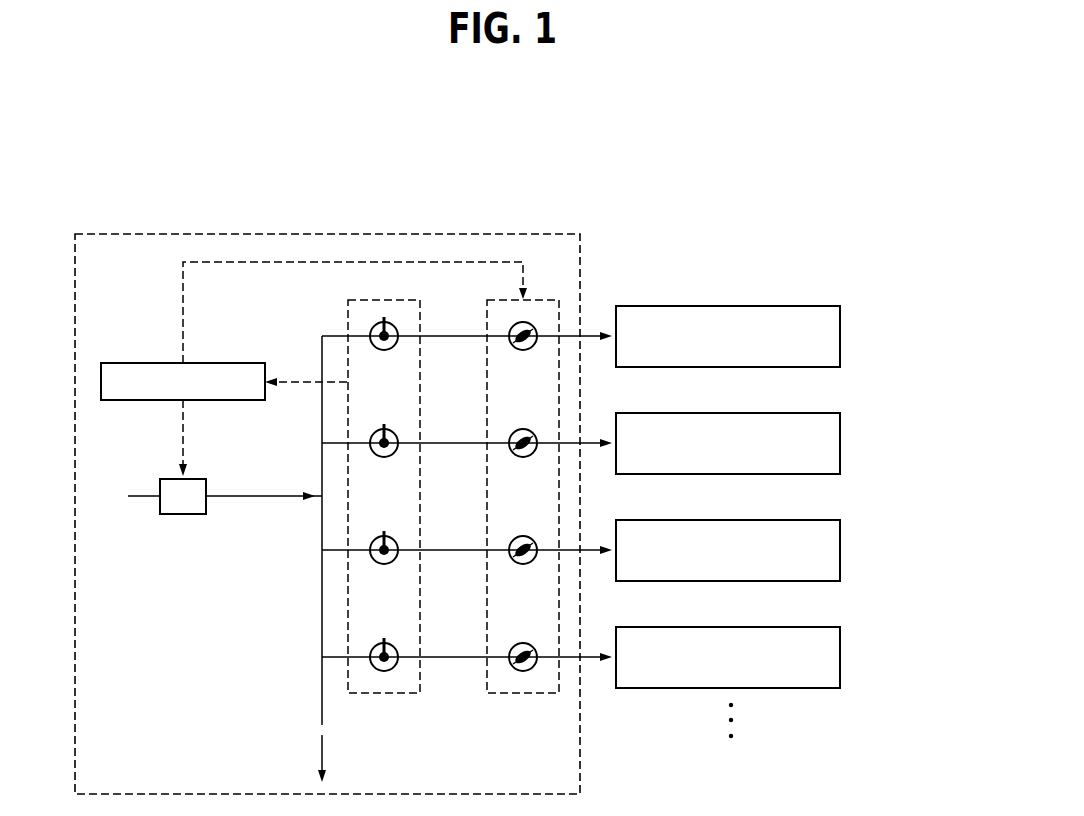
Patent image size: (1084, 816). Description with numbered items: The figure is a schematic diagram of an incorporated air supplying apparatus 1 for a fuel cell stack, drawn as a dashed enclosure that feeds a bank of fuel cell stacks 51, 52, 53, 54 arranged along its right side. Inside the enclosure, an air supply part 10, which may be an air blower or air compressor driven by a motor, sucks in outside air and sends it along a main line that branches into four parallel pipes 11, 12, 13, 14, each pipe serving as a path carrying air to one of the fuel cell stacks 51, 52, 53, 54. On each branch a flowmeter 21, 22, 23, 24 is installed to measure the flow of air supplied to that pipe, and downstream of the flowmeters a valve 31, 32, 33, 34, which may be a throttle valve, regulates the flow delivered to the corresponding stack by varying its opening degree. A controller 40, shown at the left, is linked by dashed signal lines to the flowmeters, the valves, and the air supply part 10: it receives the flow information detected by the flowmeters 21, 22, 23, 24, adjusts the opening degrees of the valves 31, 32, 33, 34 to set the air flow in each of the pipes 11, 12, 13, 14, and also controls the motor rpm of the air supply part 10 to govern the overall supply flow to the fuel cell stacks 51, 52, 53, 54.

The air supplying apparatus 1 is at (220, 218).
The air supply part 10 is at (185, 515).
The pipe 11 is at (453, 336).
The pipe 12 is at (453, 443).
The pipe 13 is at (453, 550).
The pipe 14 is at (453, 657).
The flowmeter 21 is at (384, 350).
The flowmeter 22 is at (384, 457).
The flowmeter 23 is at (384, 564).
The flowmeter 24 is at (384, 671).
The valve 31 is at (523, 350).
The valve 32 is at (523, 457).
The valve 33 is at (523, 564).
The valve 34 is at (523, 671).
The controller 40 is at (131, 362).
The fuel cell stack 51 is at (840, 336).
The fuel cell stack 52 is at (840, 443).
The fuel cell stack 53 is at (840, 550).
The fuel cell stack 54 is at (840, 657).